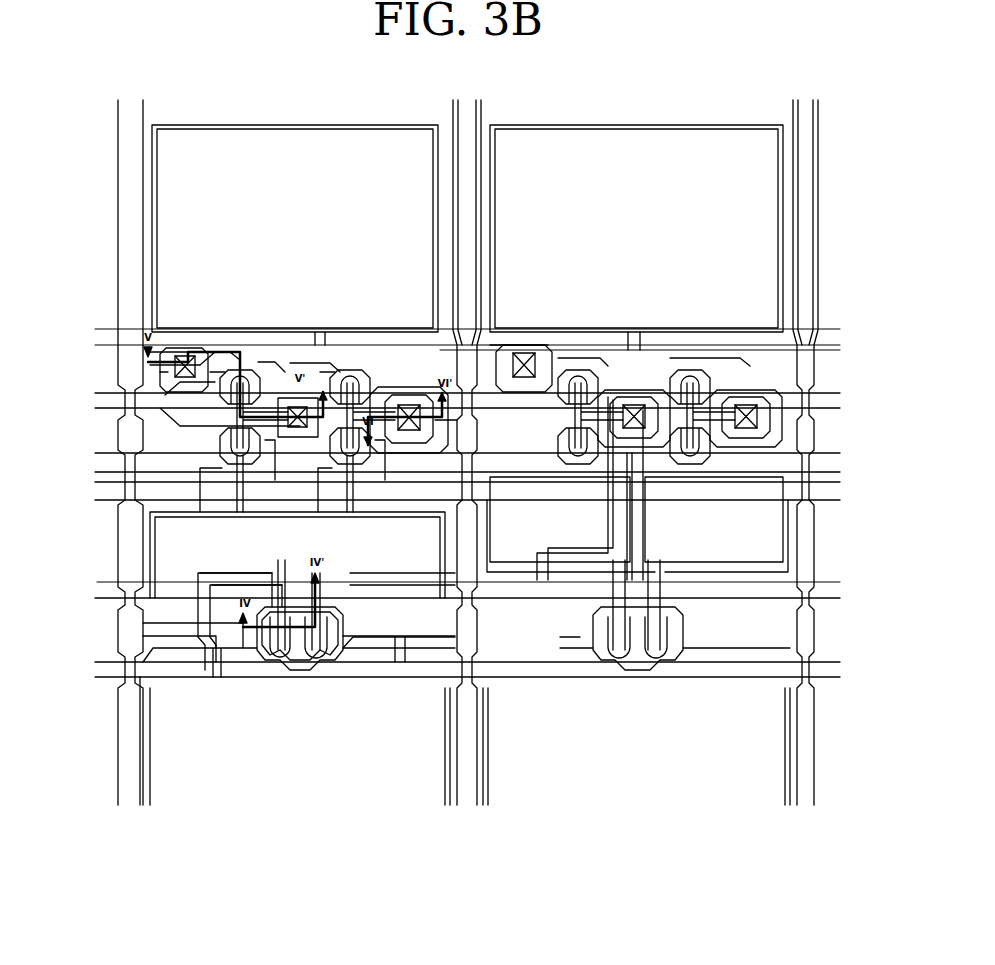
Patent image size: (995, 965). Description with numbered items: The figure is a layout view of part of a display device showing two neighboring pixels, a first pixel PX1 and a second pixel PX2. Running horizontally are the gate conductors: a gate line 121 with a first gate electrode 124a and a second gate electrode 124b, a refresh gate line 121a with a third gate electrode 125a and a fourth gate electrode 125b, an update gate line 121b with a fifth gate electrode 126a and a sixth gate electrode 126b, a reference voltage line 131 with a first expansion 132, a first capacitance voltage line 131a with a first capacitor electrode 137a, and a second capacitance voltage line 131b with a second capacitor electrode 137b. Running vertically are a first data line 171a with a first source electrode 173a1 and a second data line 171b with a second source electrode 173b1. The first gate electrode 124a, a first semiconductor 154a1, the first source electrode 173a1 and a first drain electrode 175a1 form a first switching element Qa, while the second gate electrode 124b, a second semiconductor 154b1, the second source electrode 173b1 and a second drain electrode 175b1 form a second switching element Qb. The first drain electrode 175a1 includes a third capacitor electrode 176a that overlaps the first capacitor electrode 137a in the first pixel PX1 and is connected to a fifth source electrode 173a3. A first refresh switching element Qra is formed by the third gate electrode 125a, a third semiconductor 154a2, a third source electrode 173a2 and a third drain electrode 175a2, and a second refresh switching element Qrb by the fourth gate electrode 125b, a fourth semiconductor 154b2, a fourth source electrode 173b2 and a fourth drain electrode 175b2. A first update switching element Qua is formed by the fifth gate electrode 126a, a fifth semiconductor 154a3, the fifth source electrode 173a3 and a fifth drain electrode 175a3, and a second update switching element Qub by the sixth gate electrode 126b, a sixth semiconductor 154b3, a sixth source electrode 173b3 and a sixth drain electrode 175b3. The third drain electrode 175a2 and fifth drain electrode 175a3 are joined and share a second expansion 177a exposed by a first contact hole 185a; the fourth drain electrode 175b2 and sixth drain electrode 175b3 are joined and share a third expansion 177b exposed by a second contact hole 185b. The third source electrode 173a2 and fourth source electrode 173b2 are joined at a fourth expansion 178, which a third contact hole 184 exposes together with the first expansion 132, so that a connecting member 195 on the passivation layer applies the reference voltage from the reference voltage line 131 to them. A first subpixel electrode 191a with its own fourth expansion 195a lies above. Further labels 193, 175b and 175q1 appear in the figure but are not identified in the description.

The reference voltage line 131 is at (105, 345).
The first expansion 132 is at (170, 372).
The refresh gate line 121a is at (105, 410).
The connecting member 193 is at (170, 425).
The update gate line 121b is at (105, 472).
The second capacitance voltage line 131b is at (105, 500).
The first capacitance voltage line 131a is at (105, 598).
The gate line 121 is at (100, 677).
The first data line 171a is at (120, 630).
The second data line 171b is at (456, 755).
The first subpixel electrode 191a is at (416, 335).
The first pixel PX1 is at (311, 109).
The second pixel PX2 is at (651, 109).
The first capacitor electrode 137a is at (150, 540).
The second capacitor electrode 137b is at (793, 545).
The fourth expansion 178 is at (195, 348).
The third contact hole 184 is at (150, 352).
The connecting member 195 is at (218, 350).
The fourth gate electrode 125b is at (258, 350).
The third gate electrode 125a is at (337, 350).
The sixth gate electrode 126b is at (222, 448).
The fifth gate electrode 126a is at (332, 448).
The fourth drain electrode 175b2 is at (236, 410).
The third drain electrode 175a2 is at (372, 377).
The third semiconductor 154a2 is at (292, 418).
The fourth semiconductor 154b2 is at (238, 392).
The second contact hole 185b is at (262, 368).
The first contact hole 185a is at (413, 430).
The fourth expansion 195a is at (420, 422).
The second expansion 177a is at (457, 435).
The third expansion 177b is at (305, 350).
The fourth source electrode 173b2 is at (233, 350).
The third source electrode 173a2 is at (358, 350).
The second refresh switching element Qrb is at (280, 350).
The first refresh switching element Qra is at (390, 350).
The sixth semiconductor 154b3 is at (235, 462).
The fifth semiconductor 154a3 is at (348, 462).
The second update switching element Qub is at (222, 480).
The first update switching element Qua is at (335, 480).
The sixth source electrode 173b3 is at (228, 500).
The fifth source electrode 173a3 is at (338, 500).
The sixth drain electrode 175b3 is at (243, 495).
The fifth drain electrode 175a3 is at (353, 495).
The drain electrode 175b is at (185, 602).
The third capacitor electrode 176a is at (420, 605).
The second semiconductor 154b1 is at (272, 600).
The first semiconductor 154a1 is at (345, 625).
The second drain electrode 175b1 is at (278, 666).
The first drain electrode 175a1 is at (315, 666).
The second gate electrode 124b is at (225, 662).
The first gate electrode 124a is at (347, 638).
The second source electrode 173b1 is at (258, 662).
The first source electrode 173a1 is at (338, 664).
The drain electrode 175q1 is at (412, 662).
The second switching element Qb is at (292, 673).
The first switching element Qa is at (330, 673).